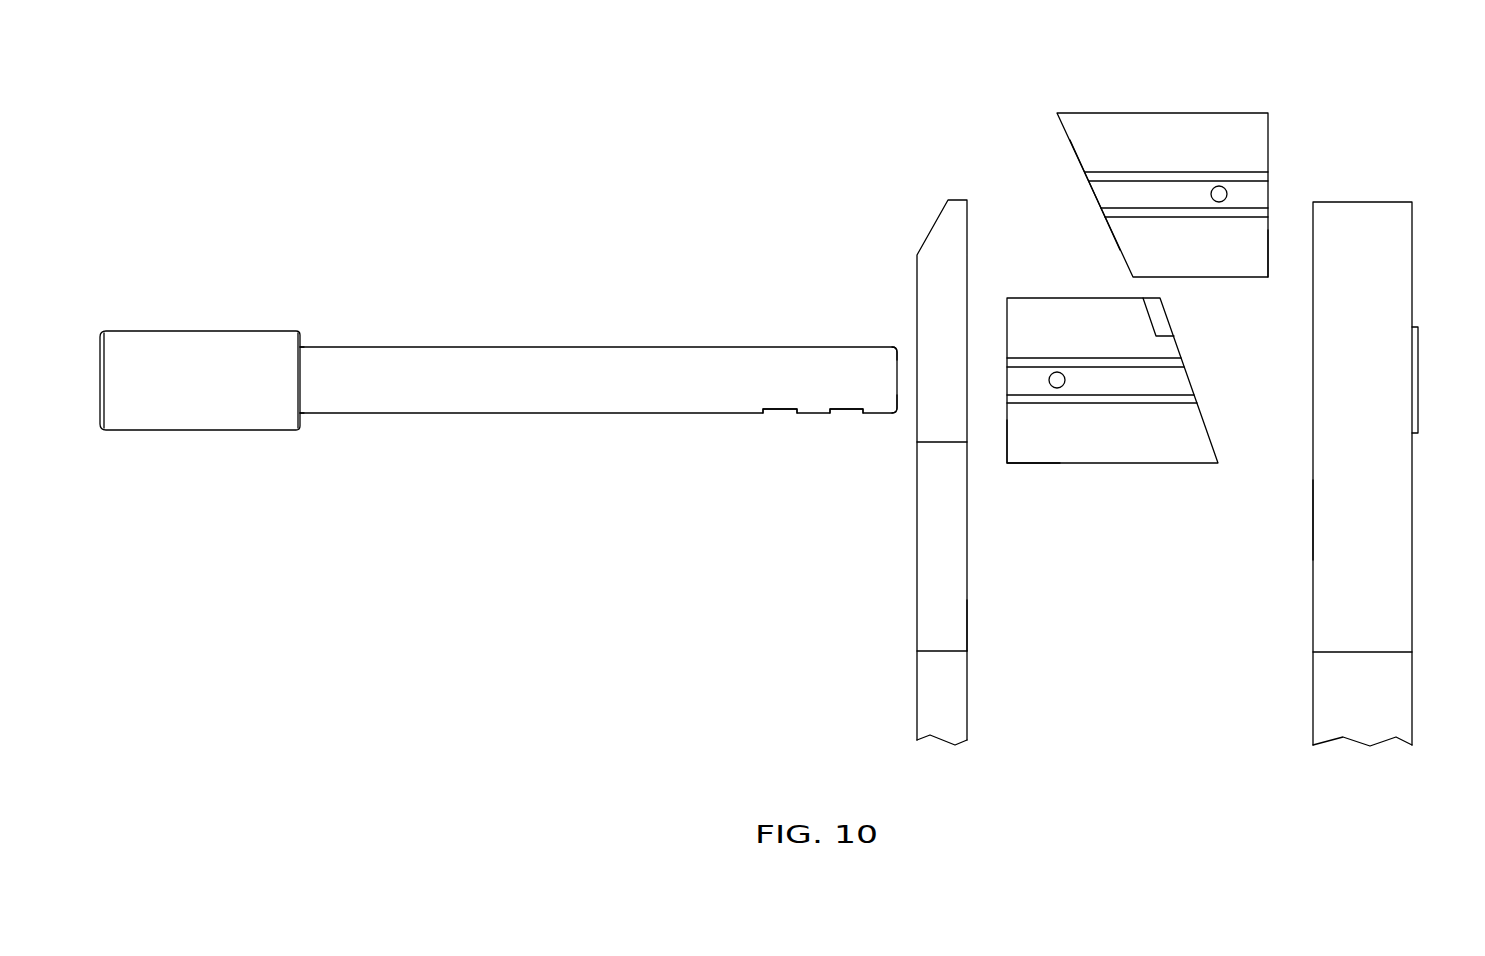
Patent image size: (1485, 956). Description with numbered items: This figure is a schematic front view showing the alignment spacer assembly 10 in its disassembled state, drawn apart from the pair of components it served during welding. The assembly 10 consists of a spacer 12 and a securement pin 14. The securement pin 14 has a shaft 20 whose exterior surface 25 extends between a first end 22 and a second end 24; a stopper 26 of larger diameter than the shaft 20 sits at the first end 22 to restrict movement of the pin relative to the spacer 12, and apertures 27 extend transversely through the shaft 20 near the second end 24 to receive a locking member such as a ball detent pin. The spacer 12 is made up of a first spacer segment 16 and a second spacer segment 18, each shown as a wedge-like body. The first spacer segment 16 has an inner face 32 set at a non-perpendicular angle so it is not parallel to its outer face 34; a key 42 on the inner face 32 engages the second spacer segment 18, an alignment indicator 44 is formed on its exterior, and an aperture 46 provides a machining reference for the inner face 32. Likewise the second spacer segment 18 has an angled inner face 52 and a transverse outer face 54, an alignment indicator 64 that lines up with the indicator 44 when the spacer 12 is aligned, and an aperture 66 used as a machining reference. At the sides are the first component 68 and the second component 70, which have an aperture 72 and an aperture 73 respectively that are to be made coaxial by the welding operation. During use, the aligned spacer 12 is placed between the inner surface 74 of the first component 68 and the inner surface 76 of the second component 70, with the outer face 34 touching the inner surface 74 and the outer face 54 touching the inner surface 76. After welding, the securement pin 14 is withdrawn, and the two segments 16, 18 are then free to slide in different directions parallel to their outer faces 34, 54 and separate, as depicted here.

The alignment spacer assembly 10 is at (972, 176).
The spacer 12 is at (1025, 148).
The securement pin 14 is at (530, 288).
The first spacer segment 16 is at (1082, 475).
The second spacer segment 18 is at (1272, 137).
The shaft 20 is at (492, 445).
The first end 22 is at (302, 353).
The second end 24 is at (905, 356).
The exterior surface 25 is at (545, 347).
The stopper 26 is at (190, 332).
The aperture 27 is at (778, 415).
The inner face 32 is at (1210, 438).
The outer face 34 is at (1006, 443).
The key 42 is at (1170, 318).
The alignment indicator 44 is at (1150, 400).
The aperture 46 is at (1057, 388).
The inner face 52 is at (1112, 237).
The outer face 54 is at (1268, 243).
The alignment indicator 64 is at (1179, 178).
The aperture 66 is at (1219, 202).
The first component 68 is at (916, 522).
The second component 70 is at (1412, 262).
The aperture 72 is at (916, 396).
The aperture 73 is at (1418, 348).
The inner surface 74 is at (967, 627).
The inner surface 76 is at (1313, 493).